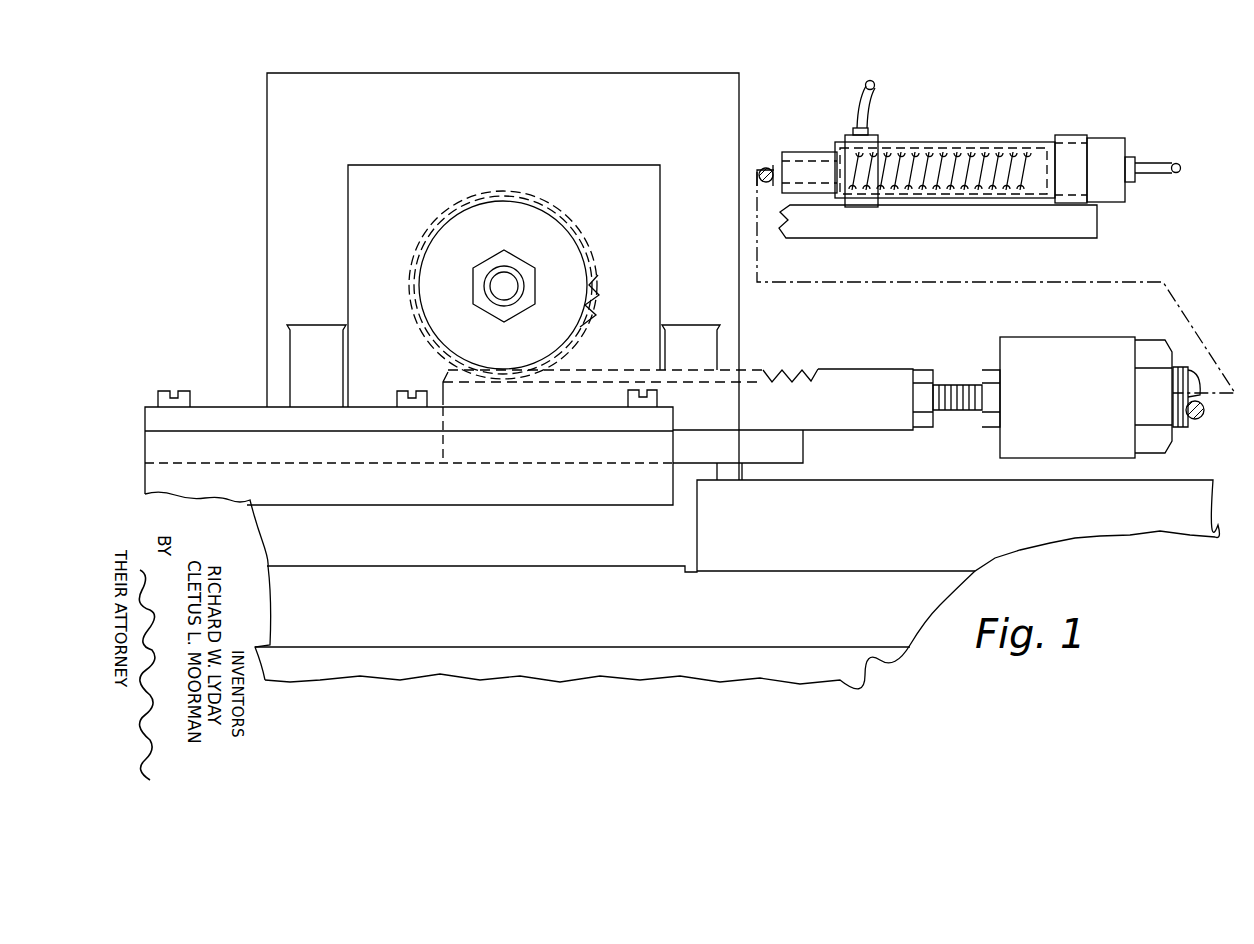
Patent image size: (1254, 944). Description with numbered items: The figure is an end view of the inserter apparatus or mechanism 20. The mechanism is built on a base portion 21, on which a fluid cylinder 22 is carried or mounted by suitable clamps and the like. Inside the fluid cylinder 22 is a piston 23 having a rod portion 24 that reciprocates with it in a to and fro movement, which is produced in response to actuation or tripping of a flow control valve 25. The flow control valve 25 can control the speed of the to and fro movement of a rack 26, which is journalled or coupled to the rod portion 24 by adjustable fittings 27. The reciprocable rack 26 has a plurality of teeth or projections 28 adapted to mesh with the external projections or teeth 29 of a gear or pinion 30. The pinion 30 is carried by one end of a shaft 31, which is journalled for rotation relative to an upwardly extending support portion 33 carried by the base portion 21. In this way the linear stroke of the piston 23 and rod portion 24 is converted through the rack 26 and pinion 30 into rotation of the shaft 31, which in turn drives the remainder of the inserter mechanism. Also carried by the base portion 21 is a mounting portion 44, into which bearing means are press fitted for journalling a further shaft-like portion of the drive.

The apparatus or mechanism 20 is at (1156, 529).
The base portion 21 is at (1092, 225).
The fluid cylinder 22 is at (941, 143).
The piston 23 is at (1036, 150).
The rod portion 24 is at (767, 167).
The flow control valve 25 is at (1126, 141).
The rack 26 is at (862, 378).
The adjustable fittings 27 is at (955, 385).
The teeth or projections 28 is at (803, 376).
The external projections or teeth 29 is at (598, 283).
The gear or pinion 30 is at (560, 240).
The shaft 31 is at (518, 288).
The upwardly extending support portion 33 is at (660, 214).
The mounting portion 44 is at (706, 80).